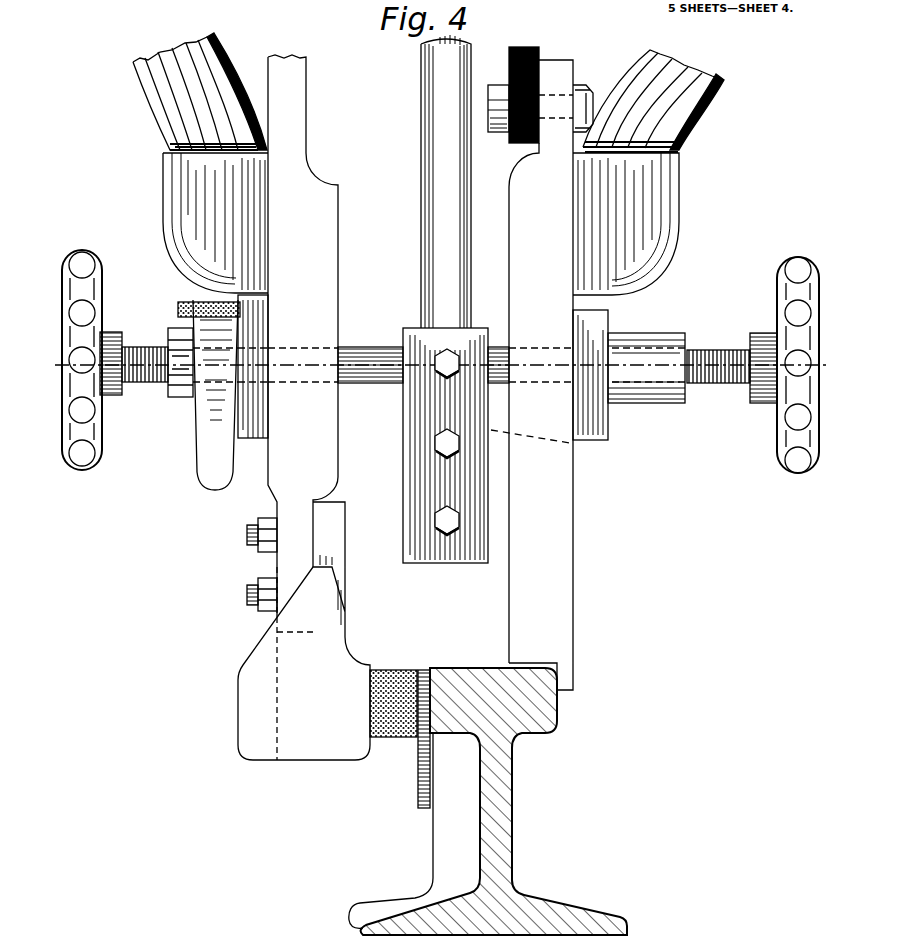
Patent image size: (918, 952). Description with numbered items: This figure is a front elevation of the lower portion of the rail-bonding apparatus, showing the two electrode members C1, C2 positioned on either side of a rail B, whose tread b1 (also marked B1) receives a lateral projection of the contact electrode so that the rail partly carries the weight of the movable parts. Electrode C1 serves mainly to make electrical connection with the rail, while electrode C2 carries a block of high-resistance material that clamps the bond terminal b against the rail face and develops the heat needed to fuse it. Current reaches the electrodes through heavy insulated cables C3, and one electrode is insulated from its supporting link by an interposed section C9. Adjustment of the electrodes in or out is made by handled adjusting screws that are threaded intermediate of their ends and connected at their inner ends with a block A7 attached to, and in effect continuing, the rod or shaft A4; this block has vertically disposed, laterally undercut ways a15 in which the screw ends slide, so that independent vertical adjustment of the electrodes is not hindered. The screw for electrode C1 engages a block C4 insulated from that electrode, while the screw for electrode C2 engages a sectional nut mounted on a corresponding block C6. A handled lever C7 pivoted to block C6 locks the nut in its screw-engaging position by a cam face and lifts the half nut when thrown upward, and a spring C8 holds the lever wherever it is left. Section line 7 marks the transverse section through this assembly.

The section line 7— 7 is at (48, 373).
The electrode member C1 is at (557, 313).
The electrode member C2 is at (313, 210).
The cables C3 is at (733, 103).
The block C4 is at (600, 328).
The block C6 is at (257, 442).
The handled lever C7 is at (197, 451).
The spring C8 is at (719, 342).
The insulating section C9 is at (539, 50).
The rod or shaft A4 is at (426, 97).
The block A7 is at (409, 473).
The undercut ways a15 is at (423, 424).
The rail B is at (512, 888).
The rail tread B1 is at (417, 795).
The bond terminal b is at (397, 740).
The rail tread b1 is at (463, 665).